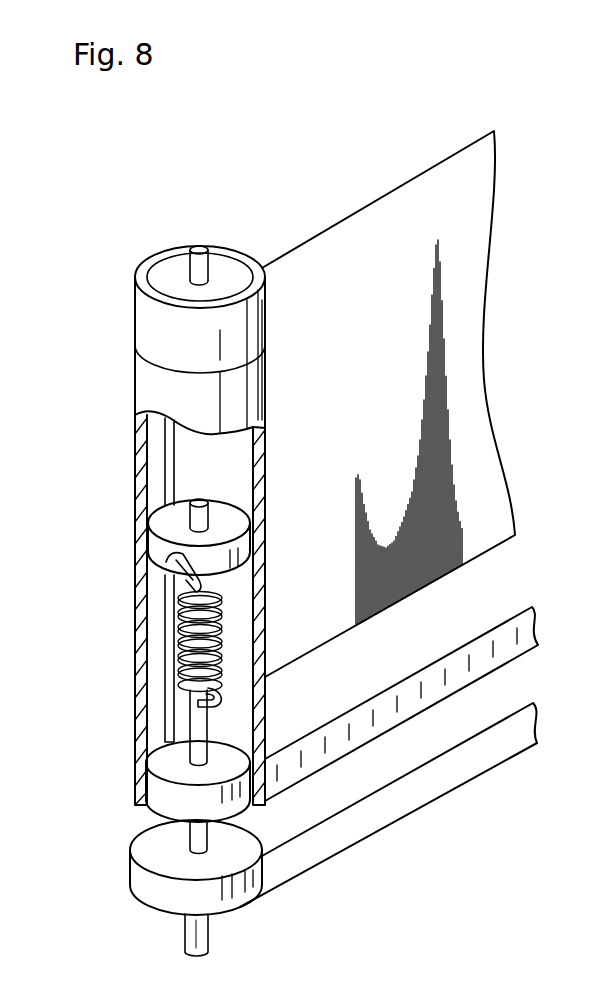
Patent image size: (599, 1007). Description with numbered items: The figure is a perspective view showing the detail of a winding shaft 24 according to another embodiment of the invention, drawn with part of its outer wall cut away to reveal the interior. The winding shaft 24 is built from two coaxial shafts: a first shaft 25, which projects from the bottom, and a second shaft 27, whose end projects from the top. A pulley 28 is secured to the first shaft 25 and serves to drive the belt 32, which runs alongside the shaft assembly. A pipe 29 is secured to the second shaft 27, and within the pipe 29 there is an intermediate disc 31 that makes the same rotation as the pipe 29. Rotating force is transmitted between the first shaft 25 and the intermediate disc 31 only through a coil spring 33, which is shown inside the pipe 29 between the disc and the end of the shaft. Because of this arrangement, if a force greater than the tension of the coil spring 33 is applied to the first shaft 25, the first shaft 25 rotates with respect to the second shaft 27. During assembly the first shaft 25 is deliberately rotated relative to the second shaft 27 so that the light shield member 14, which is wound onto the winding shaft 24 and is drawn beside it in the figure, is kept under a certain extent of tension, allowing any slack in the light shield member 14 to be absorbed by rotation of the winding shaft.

The light shield member 14 is at (386, 220).
The winding shaft 24 is at (118, 332).
The first shaft 25 is at (186, 940).
The second shaft 27 is at (197, 248).
The pulley 28 is at (152, 854).
The pipe 29 is at (134, 468).
The intermediate disc 31 is at (160, 527).
The belt 32 is at (446, 782).
The coil spring 33 is at (186, 628).